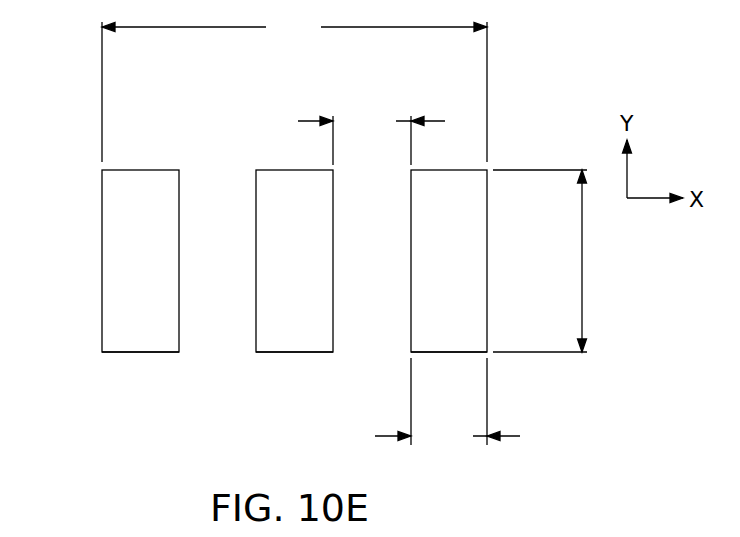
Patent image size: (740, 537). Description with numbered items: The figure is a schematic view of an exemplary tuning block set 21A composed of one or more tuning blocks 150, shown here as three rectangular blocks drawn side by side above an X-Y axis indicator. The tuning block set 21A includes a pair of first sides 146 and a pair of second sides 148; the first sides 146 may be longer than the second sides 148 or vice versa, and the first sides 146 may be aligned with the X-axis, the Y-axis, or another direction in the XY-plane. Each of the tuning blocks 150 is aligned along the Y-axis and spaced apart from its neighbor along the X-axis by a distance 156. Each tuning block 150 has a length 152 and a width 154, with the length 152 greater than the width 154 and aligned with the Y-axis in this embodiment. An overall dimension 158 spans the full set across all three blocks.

The tuning block set 21A is at (294, 339).
The first sides 146 is at (180, 266).
The second sides 148 is at (101, 258).
The tuning blocks 150 is at (143, 352).
The length 152 is at (550, 261).
The width 154 is at (447, 404).
The distance 156 is at (371, 137).
The overall width 158 is at (294, 88).